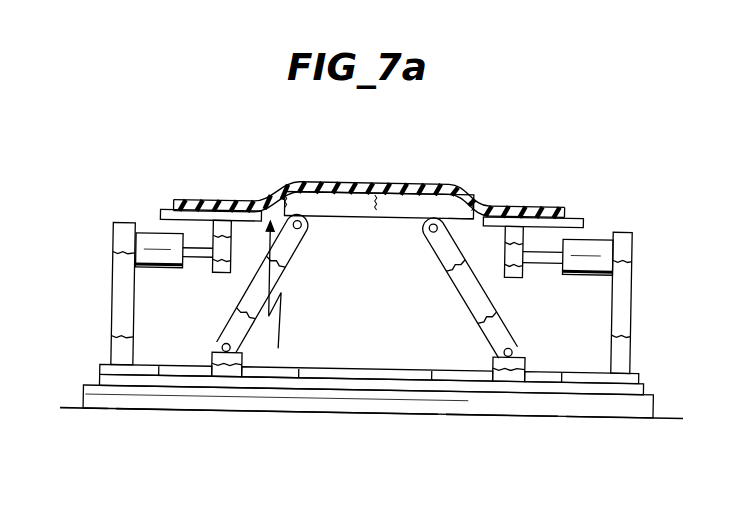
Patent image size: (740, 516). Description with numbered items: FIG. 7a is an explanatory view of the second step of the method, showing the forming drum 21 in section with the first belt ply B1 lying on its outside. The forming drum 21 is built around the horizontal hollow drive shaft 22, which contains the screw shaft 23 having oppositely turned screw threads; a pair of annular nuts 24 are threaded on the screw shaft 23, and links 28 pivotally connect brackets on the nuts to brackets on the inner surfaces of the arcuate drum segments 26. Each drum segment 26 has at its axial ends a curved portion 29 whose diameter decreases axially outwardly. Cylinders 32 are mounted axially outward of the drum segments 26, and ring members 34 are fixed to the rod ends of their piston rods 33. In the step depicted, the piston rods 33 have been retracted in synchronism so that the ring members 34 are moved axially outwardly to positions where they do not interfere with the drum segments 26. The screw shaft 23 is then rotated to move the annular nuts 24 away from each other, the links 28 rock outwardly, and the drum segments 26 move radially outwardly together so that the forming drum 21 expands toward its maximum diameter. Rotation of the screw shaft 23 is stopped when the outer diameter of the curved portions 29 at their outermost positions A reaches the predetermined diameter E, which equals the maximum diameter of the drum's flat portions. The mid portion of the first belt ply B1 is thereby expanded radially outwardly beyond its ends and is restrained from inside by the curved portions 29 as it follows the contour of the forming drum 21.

The forming drum 21 is at (392, 189).
The drive shaft 22 is at (380, 370).
The screw shaft 23 is at (567, 395).
The annular nut 24 is at (490, 380).
The drum segment 26 is at (360, 210).
The link 28 is at (466, 299).
The curved portion 29 is at (268, 205).
The cylinder 32 is at (587, 262).
The piston rod 33 is at (543, 266).
The ring member 34 is at (584, 222).
The outermost position of curved portion A is at (467, 215).
The first belt ply B1 is at (458, 190).
The predetermined diameter E is at (276, 294).